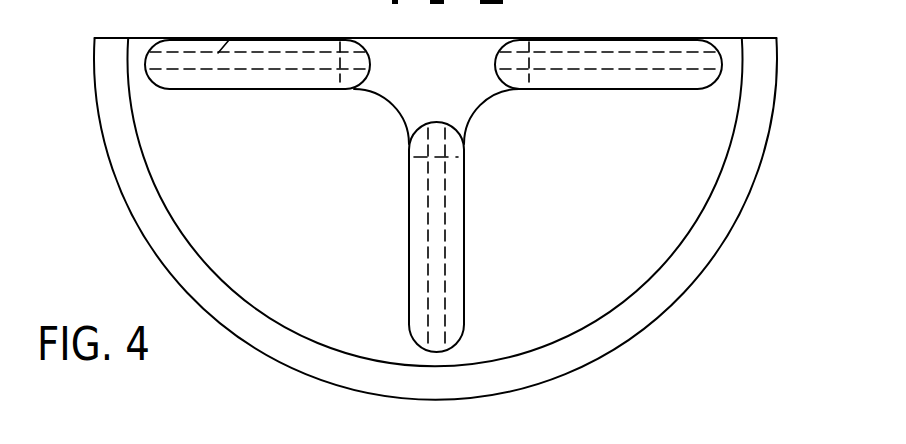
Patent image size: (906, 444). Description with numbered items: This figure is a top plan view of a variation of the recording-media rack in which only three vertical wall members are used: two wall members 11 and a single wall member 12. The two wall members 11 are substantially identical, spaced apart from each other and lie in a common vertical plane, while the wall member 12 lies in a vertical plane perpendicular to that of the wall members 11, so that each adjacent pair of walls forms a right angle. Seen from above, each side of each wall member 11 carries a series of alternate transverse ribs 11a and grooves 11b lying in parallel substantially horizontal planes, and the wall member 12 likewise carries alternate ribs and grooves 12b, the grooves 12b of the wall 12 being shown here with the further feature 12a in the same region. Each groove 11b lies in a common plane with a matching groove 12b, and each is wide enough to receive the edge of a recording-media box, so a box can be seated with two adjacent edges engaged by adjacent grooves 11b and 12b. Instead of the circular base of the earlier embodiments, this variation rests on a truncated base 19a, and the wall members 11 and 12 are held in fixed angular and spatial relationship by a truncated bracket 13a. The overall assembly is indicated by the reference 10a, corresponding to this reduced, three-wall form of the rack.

The semicircular body half 10a is at (780, 137).
The truncated base 19a is at (748, 190).
The wall member 11 is at (255, 40).
The transverse rib 11a is at (172, 40).
The groove 11b is at (232, 32).
The truncated bracket 13a is at (492, 45).
The wall member 12 is at (465, 338).
The vertical slot edge 12a is at (412, 331).
The groove 12b is at (430, 338).